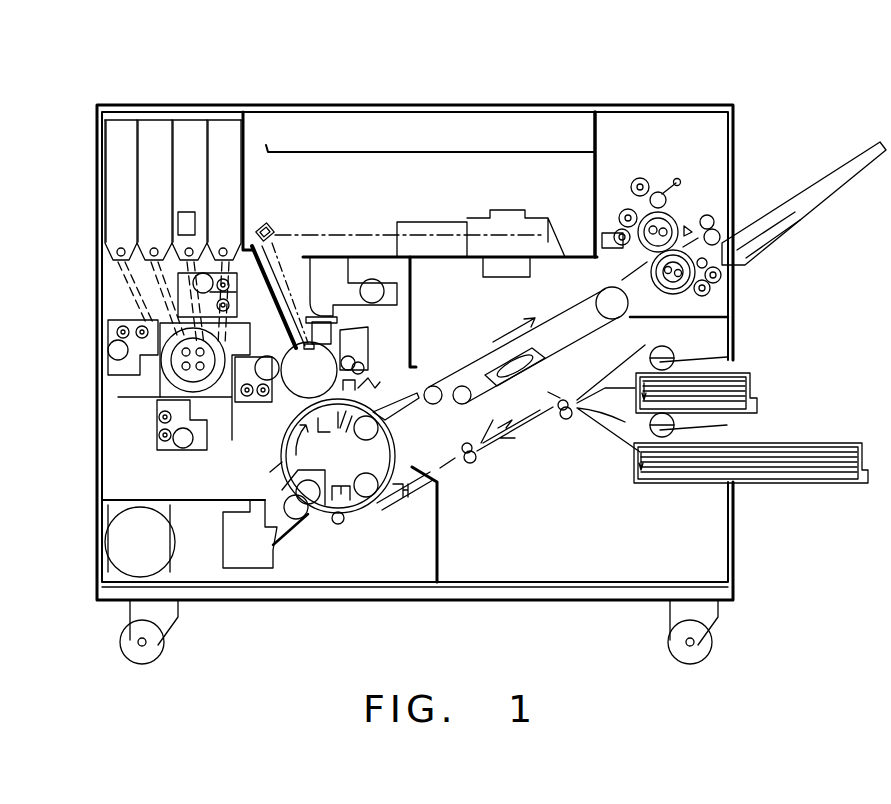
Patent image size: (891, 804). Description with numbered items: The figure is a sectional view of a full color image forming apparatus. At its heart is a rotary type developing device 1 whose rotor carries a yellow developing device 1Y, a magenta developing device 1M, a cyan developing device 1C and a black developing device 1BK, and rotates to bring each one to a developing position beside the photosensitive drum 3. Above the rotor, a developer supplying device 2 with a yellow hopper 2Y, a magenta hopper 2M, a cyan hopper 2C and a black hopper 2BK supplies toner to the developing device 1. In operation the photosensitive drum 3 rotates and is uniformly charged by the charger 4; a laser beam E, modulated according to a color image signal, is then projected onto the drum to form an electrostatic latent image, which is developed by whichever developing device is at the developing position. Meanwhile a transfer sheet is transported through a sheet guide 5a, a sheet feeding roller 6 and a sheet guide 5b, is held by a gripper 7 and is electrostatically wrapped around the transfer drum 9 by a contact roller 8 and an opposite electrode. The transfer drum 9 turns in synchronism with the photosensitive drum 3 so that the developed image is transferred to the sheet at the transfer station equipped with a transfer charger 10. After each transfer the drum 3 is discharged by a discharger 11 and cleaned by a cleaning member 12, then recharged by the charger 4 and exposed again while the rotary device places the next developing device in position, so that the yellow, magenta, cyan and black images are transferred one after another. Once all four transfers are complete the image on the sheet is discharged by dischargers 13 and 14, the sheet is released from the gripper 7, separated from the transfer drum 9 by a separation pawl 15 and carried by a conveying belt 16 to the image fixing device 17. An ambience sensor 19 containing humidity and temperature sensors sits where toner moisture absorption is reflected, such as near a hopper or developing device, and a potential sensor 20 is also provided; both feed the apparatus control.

The rotary type developing device 1 is at (120, 398).
The black developing device 1BK is at (227, 298).
The cyan developing device 1C is at (108, 356).
The magenta developing device 1M is at (165, 442).
The yellow developing device 1Y is at (245, 403).
The developer supplying device 2 is at (183, 125).
The black hopper 2BK is at (118, 128).
The cyan hopper 2C is at (152, 128).
The magenta hopper 2M is at (193, 130).
The yellow hopper 2Y is at (225, 128).
The photosensitive drum 3 is at (296, 386).
The charger 4 is at (335, 327).
The sheet guide 5a is at (490, 449).
The sheet guide 5b is at (395, 498).
The sheet feeding roller 6 is at (470, 465).
The gripper 7 is at (275, 466).
The contact roller 8 is at (330, 525).
The transfer drum 9 is at (352, 525).
The transfer charger 10 is at (330, 422).
The discharger 11 is at (362, 385).
The cleaning member 12 is at (370, 344).
The discharger 13 is at (358, 432).
The discharger 14 is at (377, 382).
The separation pawl 15 is at (425, 394).
The conveying belt 16 is at (563, 314).
The image fixing device 17 is at (718, 164).
The ambience sensor 19 is at (178, 222).
The potential sensor 20 is at (290, 337).
The laser beam E is at (298, 235).